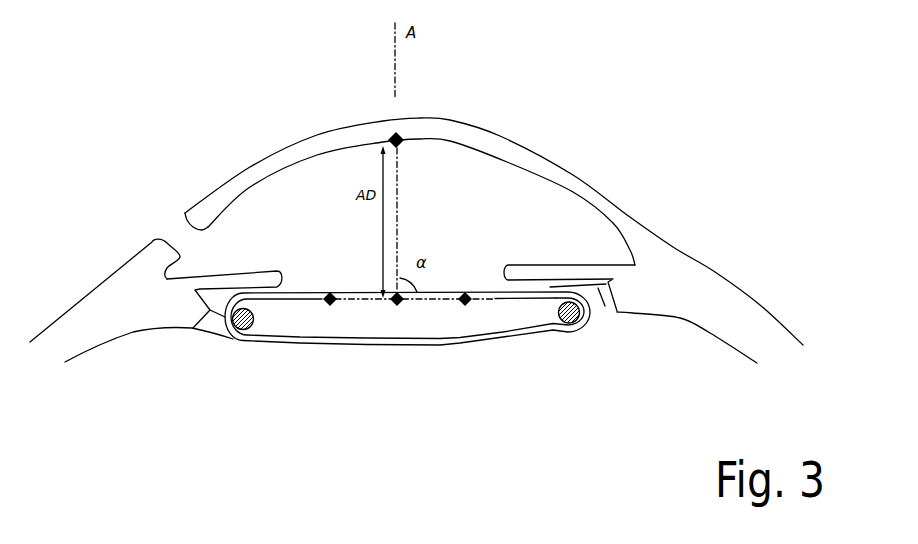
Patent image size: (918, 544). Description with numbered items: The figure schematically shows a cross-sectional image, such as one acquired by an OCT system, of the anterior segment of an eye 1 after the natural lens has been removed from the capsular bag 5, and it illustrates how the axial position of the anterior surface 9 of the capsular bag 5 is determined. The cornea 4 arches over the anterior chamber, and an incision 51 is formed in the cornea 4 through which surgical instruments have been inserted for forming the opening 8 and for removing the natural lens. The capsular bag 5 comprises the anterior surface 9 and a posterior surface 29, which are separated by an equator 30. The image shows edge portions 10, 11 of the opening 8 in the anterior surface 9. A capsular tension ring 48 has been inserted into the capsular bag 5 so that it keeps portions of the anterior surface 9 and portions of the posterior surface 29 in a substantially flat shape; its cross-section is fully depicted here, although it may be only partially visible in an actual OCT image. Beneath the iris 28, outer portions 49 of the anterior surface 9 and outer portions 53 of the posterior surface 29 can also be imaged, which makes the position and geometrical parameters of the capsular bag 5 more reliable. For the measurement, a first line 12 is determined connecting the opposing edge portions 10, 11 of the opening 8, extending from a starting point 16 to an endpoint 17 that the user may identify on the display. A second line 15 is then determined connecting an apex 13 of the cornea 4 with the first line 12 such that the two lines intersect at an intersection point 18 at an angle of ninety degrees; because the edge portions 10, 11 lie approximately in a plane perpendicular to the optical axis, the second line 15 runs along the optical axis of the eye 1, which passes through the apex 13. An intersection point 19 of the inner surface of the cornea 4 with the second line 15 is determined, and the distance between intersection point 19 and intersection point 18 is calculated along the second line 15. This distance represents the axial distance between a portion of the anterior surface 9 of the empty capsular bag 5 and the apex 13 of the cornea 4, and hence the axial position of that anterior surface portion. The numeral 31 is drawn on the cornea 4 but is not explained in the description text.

The eye 1 is at (105, 76).
The cornea 4 is at (263, 138).
The incision 51 is at (157, 204).
The apex 13 is at (389, 128).
The intersection point 19 is at (404, 138).
The posterior corneal surface 31 is at (434, 130).
The second line 15 is at (400, 195).
The iris 28 is at (548, 265).
The opening 8 is at (441, 296).
The edge portion 10 is at (327, 294).
The first line 12 is at (388, 295).
The edge portion 11 is at (466, 293).
The anterior surface 9 is at (495, 291).
The capsular bag 5 is at (399, 348).
The posterior surface 29 is at (373, 343).
The outer portions of the posterior surface 53 is at (537, 341).
The equator 30 is at (225, 315).
The capsular tension ring 48 is at (580, 322).
The starting point 16 is at (338, 305).
The intersection point 18 is at (403, 307).
The endpoint 17 is at (463, 305).
The outer portions of the anterior surface 49 is at (530, 313).